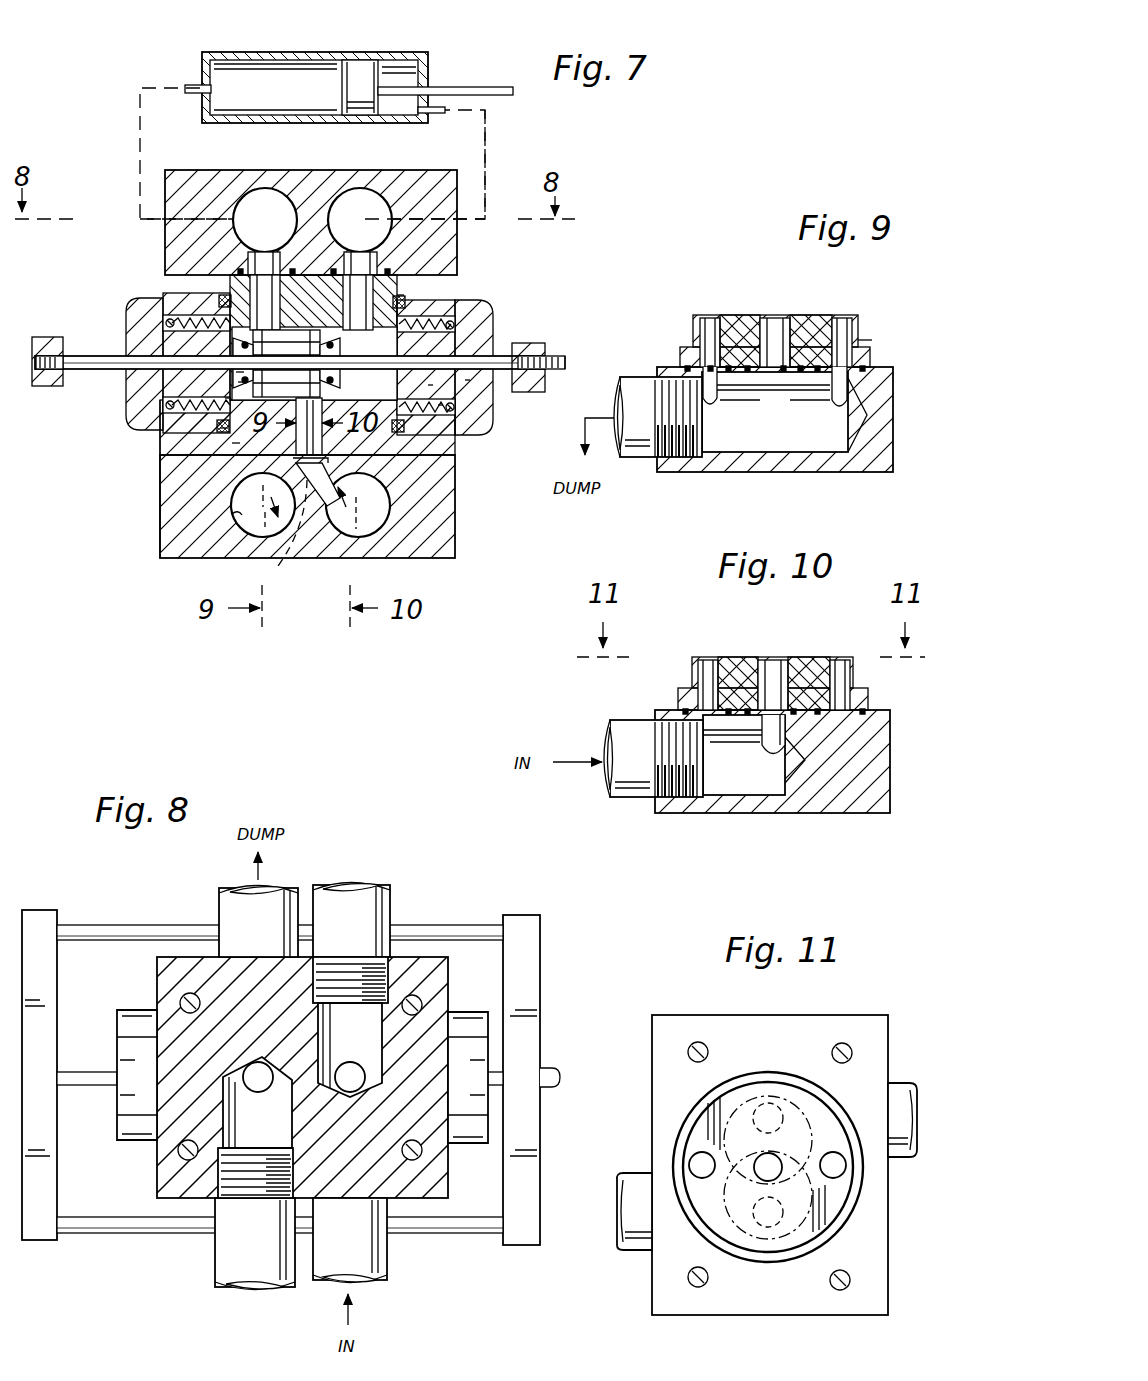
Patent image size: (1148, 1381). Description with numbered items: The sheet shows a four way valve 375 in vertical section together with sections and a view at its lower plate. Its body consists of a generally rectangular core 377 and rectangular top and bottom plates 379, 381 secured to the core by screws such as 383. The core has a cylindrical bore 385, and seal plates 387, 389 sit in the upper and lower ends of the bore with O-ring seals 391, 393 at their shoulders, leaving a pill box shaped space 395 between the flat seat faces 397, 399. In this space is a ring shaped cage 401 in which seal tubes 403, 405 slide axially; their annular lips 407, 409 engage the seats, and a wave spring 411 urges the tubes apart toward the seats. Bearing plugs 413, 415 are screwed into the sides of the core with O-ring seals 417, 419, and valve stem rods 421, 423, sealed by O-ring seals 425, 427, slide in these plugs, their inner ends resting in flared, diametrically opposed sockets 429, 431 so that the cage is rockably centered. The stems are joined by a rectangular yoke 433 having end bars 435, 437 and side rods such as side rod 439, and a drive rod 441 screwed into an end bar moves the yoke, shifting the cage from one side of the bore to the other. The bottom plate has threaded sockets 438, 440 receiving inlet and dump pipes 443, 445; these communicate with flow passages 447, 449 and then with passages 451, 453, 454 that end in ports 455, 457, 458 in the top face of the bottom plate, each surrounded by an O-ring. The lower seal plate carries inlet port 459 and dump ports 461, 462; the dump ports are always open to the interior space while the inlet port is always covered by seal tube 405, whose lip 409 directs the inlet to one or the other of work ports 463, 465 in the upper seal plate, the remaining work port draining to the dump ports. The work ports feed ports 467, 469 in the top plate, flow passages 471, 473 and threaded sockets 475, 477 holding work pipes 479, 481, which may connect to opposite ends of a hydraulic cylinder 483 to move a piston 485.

In FIG. 7, the four way valve 375 is at (150, 490).
In FIG. 7, the core 377 is at (185, 415).
In FIG. 7, the top plate 379 is at (452, 190).
In FIG. 8, the top plate 379 is at (433, 970).
In FIG. 7, the bottom plate 381 is at (430, 508).
In FIG. 9, the bottom plate 381 is at (873, 388).
In FIG. 10, the bottom plate 381 is at (867, 740).
In FIG. 11, the bottom plate 381 is at (652, 1302).
In FIG. 8, the screws 383 is at (178, 998).
In FIG. 11, the screws 383 is at (838, 1288).
In FIG. 7, the cylindrical bore 385 is at (400, 300).
In FIG. 7, the seal plate 387 is at (212, 300).
In FIG. 7, the seal plate 389 is at (232, 445).
In FIG. 9, the seal plate 389 is at (746, 336).
In FIG. 10, the seal plate 389 is at (736, 670).
In FIG. 11, the seal plate 389 is at (832, 1190).
In FIG. 7, the O-ring seal 391 is at (205, 320).
In FIG. 7, the O-ring seal 393 is at (220, 430).
In FIG. 7, the pill box shaped space 395 is at (385, 392).
In FIG. 7, the flat seat face 397 is at (430, 385).
In FIG. 7, the flat seat face 399 is at (400, 312).
In FIG. 7, the cage 401 is at (353, 300).
In FIG. 7, the seal tube 403 is at (241, 168).
In FIG. 7, the seal tube 405 is at (235, 372).
In FIG. 7, the annular lip 407 is at (303, 300).
In FIG. 7, the annular lip 409 is at (237, 382).
In FIG. 11, the annular lip 409 is at (738, 1090).
In FIG. 7, the wave spring 411 is at (240, 170).
In FIG. 7, the bearing plug 413 is at (343, 300).
In FIG. 7, the bearing plug 415 is at (440, 335).
In FIG. 7, the O-ring seal 417 is at (440, 405).
In FIG. 7, the O-ring seal 419 is at (225, 400).
In FIG. 7, the valve stem rod 421 is at (455, 358).
In FIG. 7, the valve stem rod 423 is at (93, 356).
In FIG. 7, the O-ring seal 425 is at (470, 380).
In FIG. 7, the O-ring seal 427 is at (210, 358).
In FIG. 7, the socket 429 is at (308, 363).
In FIG. 7, the socket 431 is at (230, 368).
In FIG. 8, the yoke 433 is at (546, 946).
In FIG. 7, the end bar 435 is at (48, 387).
In FIG. 8, the end bar 435 is at (40, 1242).
In FIG. 7, the end bar 437 is at (548, 348).
In FIG. 8, the end bar 437 is at (487, 930).
In FIG. 10, the threaded socket 438 is at (688, 800).
In FIG. 8, the side rod 439 is at (80, 1226).
In FIG. 9, the threaded socket 440 is at (687, 458).
In FIG. 7, the drive rod 441 is at (570, 360).
In FIG. 8, the drive rod 441 is at (550, 1068).
In FIG. 8, the inlet pipe 443 is at (386, 1248).
In FIG. 10, the inlet pipe 443 is at (638, 790).
In FIG. 11, the inlet pipe 443 is at (630, 1250).
In FIG. 8, the dump pipe 445 is at (235, 888).
In FIG. 9, the dump pipe 445 is at (637, 380).
In FIG. 11, the dump pipe 445 is at (900, 1085).
In FIG. 7, the flow passage 447 is at (372, 520).
In FIG. 10, the flow passage 447 is at (748, 768).
In FIG. 7, the flow passage 449 is at (245, 518).
In FIG. 9, the flow passage 449 is at (790, 425).
In FIG. 7, the passage 451 is at (335, 492).
In FIG. 10, the passage 451 is at (774, 760).
In FIG. 7, the passage 453 is at (272, 575).
In FIG. 9, the passage 453 is at (712, 405).
In FIG. 9, the passage 454 is at (838, 408).
In FIG. 9, the port 455 is at (806, 336).
In FIG. 10, the port 455 is at (801, 706).
In FIG. 9, the port 457 is at (736, 336).
In FIG. 9, the port 458 is at (860, 346).
In FIG. 7, the inlet port 459 is at (232, 505).
In FIG. 9, the inlet port 459 is at (786, 336).
In FIG. 10, the inlet port 459 is at (773, 670).
In FIG. 11, the inlet port 459 is at (758, 1158).
In FIG. 9, the dump port 461 is at (712, 340).
In FIG. 10, the dump port 461 is at (702, 672).
In FIG. 11, the dump port 461 is at (697, 1163).
In FIG. 9, the dump port 462 is at (838, 340).
In FIG. 10, the dump port 462 is at (846, 672).
In FIG. 11, the dump port 462 is at (830, 1157).
In FIG. 7, the work port 463 is at (218, 295).
In FIG. 11, the work port 463 is at (772, 1102).
In FIG. 7, the work port 465 is at (405, 280).
In FIG. 11, the work port 465 is at (775, 1230).
In FIG. 7, the port 467 is at (272, 300).
In FIG. 8, the port 467 is at (262, 1093).
In FIG. 7, the port 469 is at (372, 300).
In FIG. 8, the port 469 is at (358, 1062).
In FIG. 7, the flow passage 471 is at (288, 330).
In FIG. 8, the flow passage 471 is at (232, 1118).
In FIG. 8, the flow passage 473 is at (378, 1034).
In FIG. 8, the threaded socket 475 is at (212, 1172).
In FIG. 8, the threaded socket 477 is at (392, 975).
In FIG. 7, the work pipe 479 is at (480, 128).
In FIG. 8, the work pipe 479 is at (350, 905).
In FIG. 7, the work pipe 481 is at (140, 106).
In FIG. 8, the work pipe 481 is at (216, 1268).
In FIG. 7, the hydraulic cylinder 483 is at (250, 58).
In FIG. 7, the piston 485 is at (362, 66).